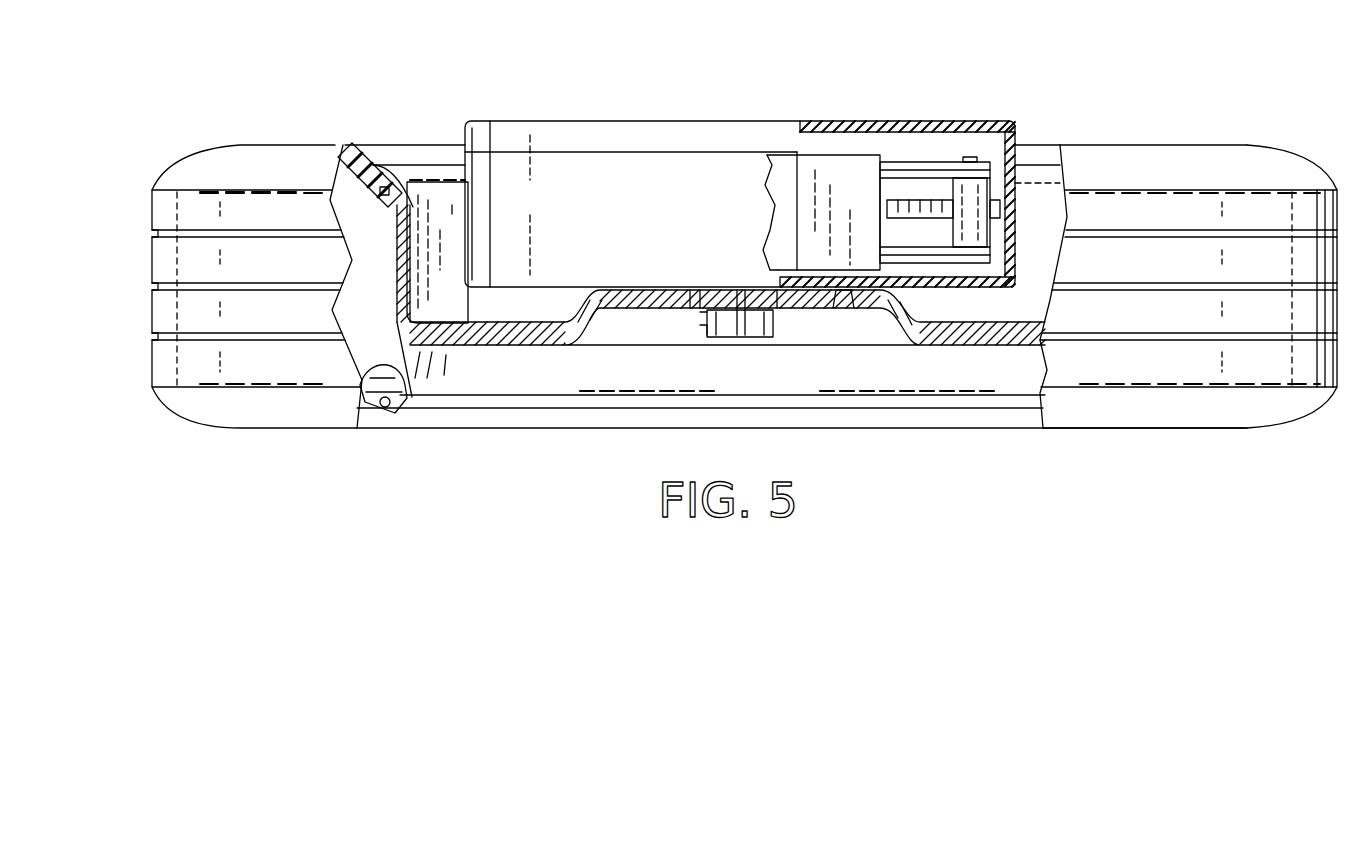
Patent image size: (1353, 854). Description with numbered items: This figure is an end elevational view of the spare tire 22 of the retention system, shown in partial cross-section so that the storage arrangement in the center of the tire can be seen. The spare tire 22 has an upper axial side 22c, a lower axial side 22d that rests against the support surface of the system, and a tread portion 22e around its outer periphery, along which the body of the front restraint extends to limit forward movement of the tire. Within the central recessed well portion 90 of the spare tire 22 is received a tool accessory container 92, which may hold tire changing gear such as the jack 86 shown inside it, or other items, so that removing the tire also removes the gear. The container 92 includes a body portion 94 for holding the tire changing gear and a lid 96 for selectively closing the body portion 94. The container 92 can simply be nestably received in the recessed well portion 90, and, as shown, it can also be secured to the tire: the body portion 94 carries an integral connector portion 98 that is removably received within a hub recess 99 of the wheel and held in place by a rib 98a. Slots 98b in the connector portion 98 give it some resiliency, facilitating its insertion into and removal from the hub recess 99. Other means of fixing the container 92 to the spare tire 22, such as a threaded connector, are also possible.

The spare tire 22 is at (1190, 143).
The upper axial side 22c is at (1130, 145).
The lower axial side 22d is at (1108, 430).
The tread portion 22e is at (150, 258).
The jack 86 is at (915, 162).
The recessed well portion 90 is at (441, 205).
The tool accessory container 92 is at (606, 120).
The body portion 94 is at (1018, 247).
The lid 96 is at (845, 125).
The connector portion 98 is at (720, 293).
The rib 98a is at (725, 313).
The slots 98b is at (742, 290).
The hub recess 99 is at (705, 327).